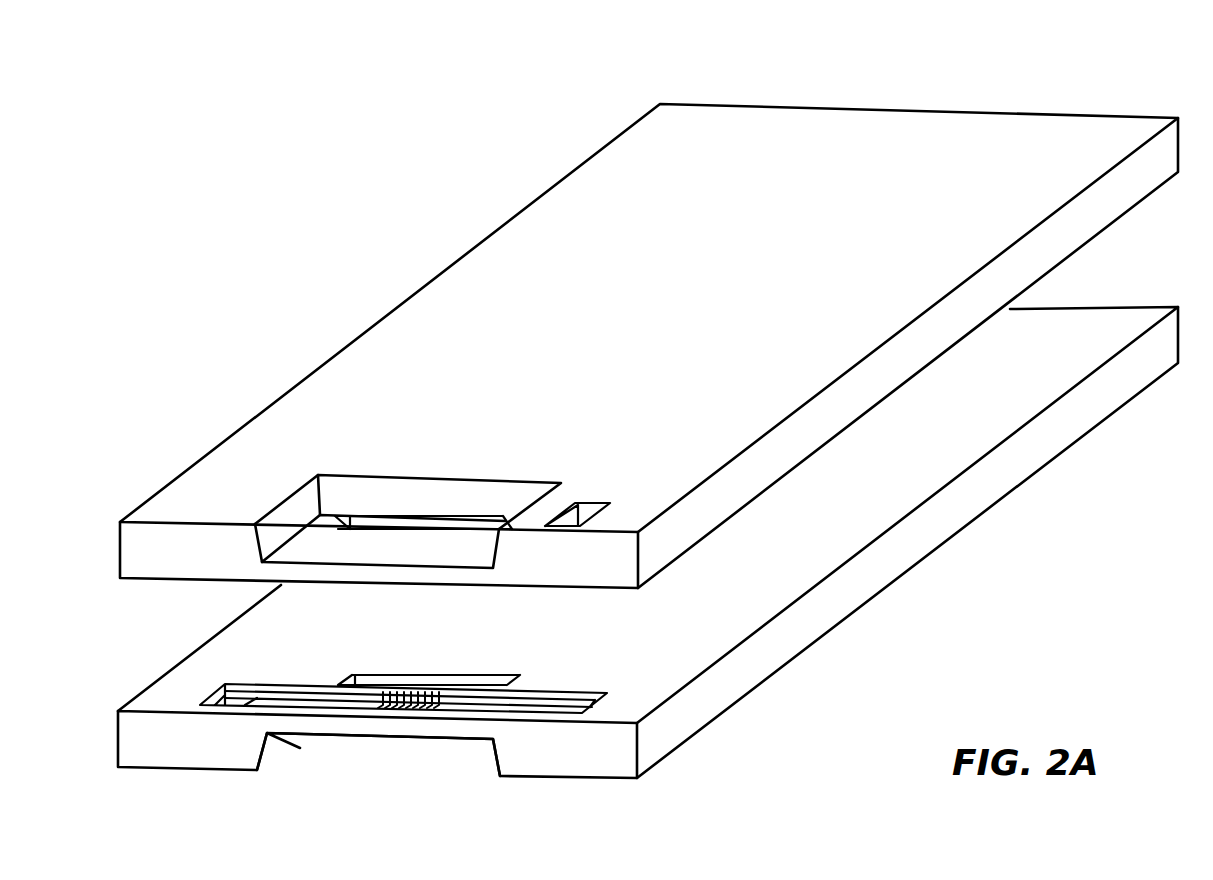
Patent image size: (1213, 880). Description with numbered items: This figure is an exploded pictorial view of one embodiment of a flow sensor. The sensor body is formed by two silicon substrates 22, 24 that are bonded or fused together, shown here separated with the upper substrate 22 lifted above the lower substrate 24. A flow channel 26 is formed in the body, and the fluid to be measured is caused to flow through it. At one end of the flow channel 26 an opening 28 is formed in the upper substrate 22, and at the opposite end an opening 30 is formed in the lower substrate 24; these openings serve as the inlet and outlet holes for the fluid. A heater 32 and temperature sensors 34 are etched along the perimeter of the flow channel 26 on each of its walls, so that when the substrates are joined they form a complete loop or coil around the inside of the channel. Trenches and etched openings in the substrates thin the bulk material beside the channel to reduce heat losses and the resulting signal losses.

The silicon substrate 22 is at (1088, 112).
The silicon substrate 24 is at (1098, 423).
The flow channel 26 is at (263, 700).
The opening 28 is at (588, 505).
The opening 30 is at (218, 690).
The heater 32 is at (408, 692).
The temperature sensors 34 is at (388, 692).